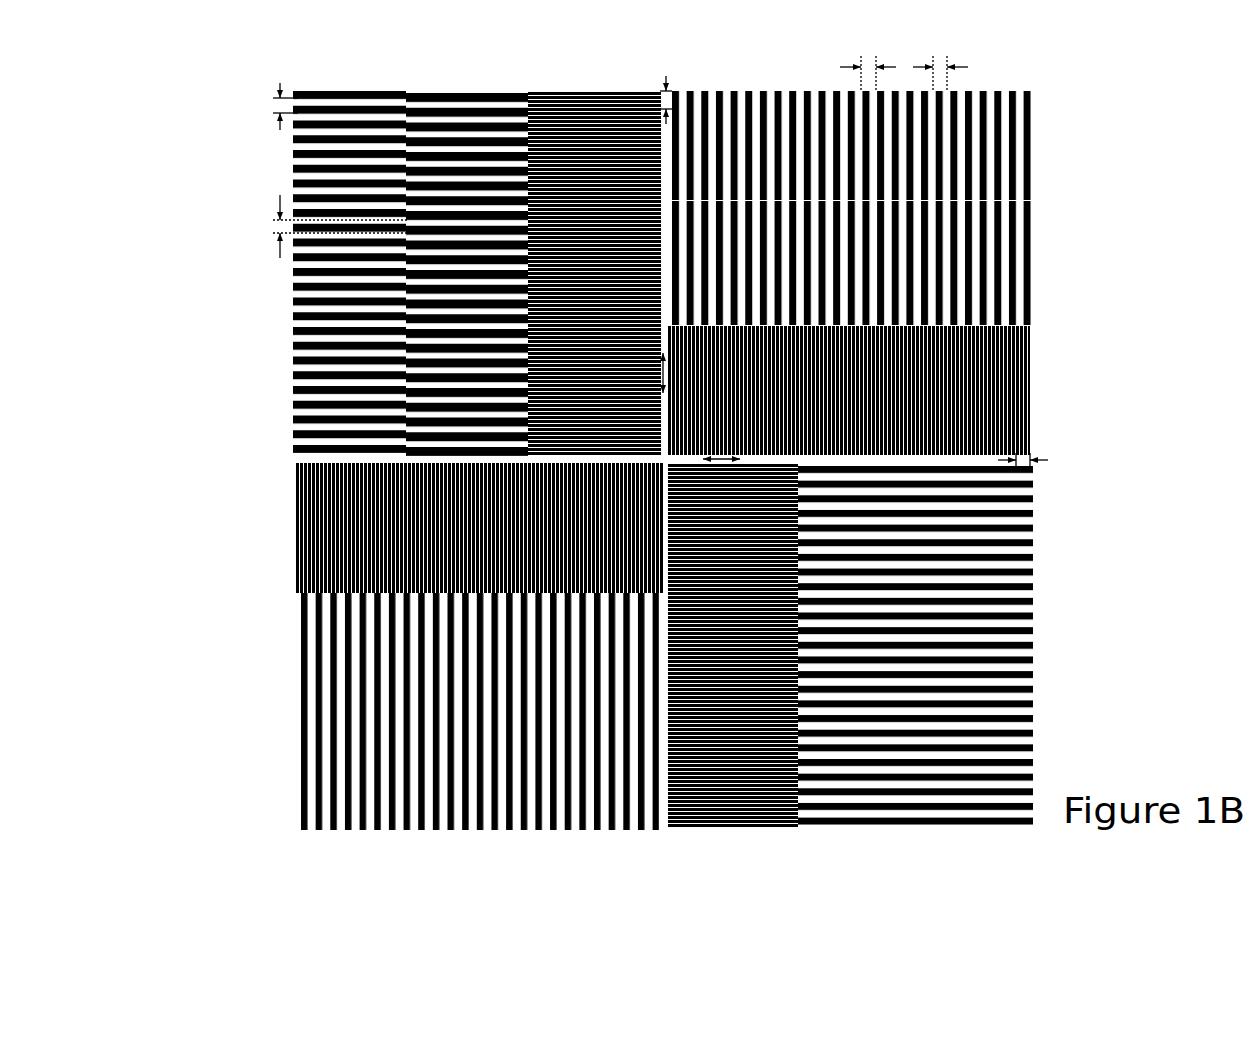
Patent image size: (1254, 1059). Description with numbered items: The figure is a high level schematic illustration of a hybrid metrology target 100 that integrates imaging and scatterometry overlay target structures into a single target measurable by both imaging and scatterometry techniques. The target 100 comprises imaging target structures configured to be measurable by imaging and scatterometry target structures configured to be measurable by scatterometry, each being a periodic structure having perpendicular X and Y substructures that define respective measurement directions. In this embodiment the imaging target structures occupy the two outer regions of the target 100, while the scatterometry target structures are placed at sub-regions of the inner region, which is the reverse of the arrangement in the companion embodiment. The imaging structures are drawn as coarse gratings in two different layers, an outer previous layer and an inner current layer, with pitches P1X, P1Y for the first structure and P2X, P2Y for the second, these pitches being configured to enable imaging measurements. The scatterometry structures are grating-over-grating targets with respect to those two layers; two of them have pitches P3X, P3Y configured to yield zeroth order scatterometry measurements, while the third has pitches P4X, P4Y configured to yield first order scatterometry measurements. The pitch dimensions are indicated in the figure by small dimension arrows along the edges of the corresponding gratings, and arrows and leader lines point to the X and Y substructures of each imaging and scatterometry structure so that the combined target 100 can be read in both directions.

The hybrid metrology target 100 is at (203, 38).
The pitch of first imaging target structure in Y P1Y is at (268, 106).
The pitch of second imaging target structure in Y P2Y is at (323, 226).
The pitch of zeroth order scatterometry structures in Y P3Y is at (660, 78).
The pitch of first order scatterometry structure in Y P4Y is at (395, 367).
The pitch of first imaging target structure in X P1X is at (868, 56).
The pitch of second imaging target structure in X P2X is at (940, 56).
The pitch of zeroth order scatterometry structures in X P3X is at (1036, 452).
The pitch of first order scatterometry structure in X P4X is at (735, 455).